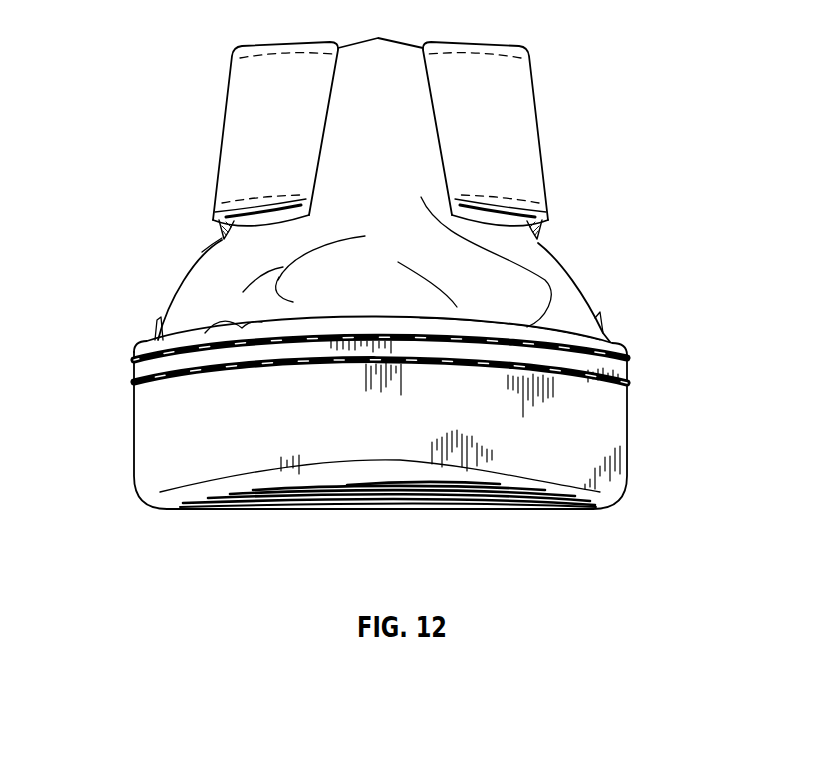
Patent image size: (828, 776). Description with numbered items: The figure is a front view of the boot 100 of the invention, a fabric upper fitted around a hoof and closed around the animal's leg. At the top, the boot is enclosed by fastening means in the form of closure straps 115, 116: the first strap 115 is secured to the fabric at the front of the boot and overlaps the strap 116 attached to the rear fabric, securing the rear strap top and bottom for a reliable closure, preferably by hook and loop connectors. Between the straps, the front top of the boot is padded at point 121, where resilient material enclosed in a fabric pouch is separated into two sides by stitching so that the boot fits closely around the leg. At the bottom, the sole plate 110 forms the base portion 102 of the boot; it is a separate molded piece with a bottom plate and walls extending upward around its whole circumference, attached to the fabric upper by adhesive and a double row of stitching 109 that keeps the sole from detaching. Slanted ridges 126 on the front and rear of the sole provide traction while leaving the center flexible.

The carrying device 100 is at (131, 66).
The base portion 102 is at (675, 339).
The double row of stitching 109 is at (134, 358).
The sole plate 110 is at (323, 403).
The strap 115 is at (227, 127).
The strap 116 is at (220, 228).
The front padding 121 is at (377, 40).
The slanted ridges 126 is at (493, 503).